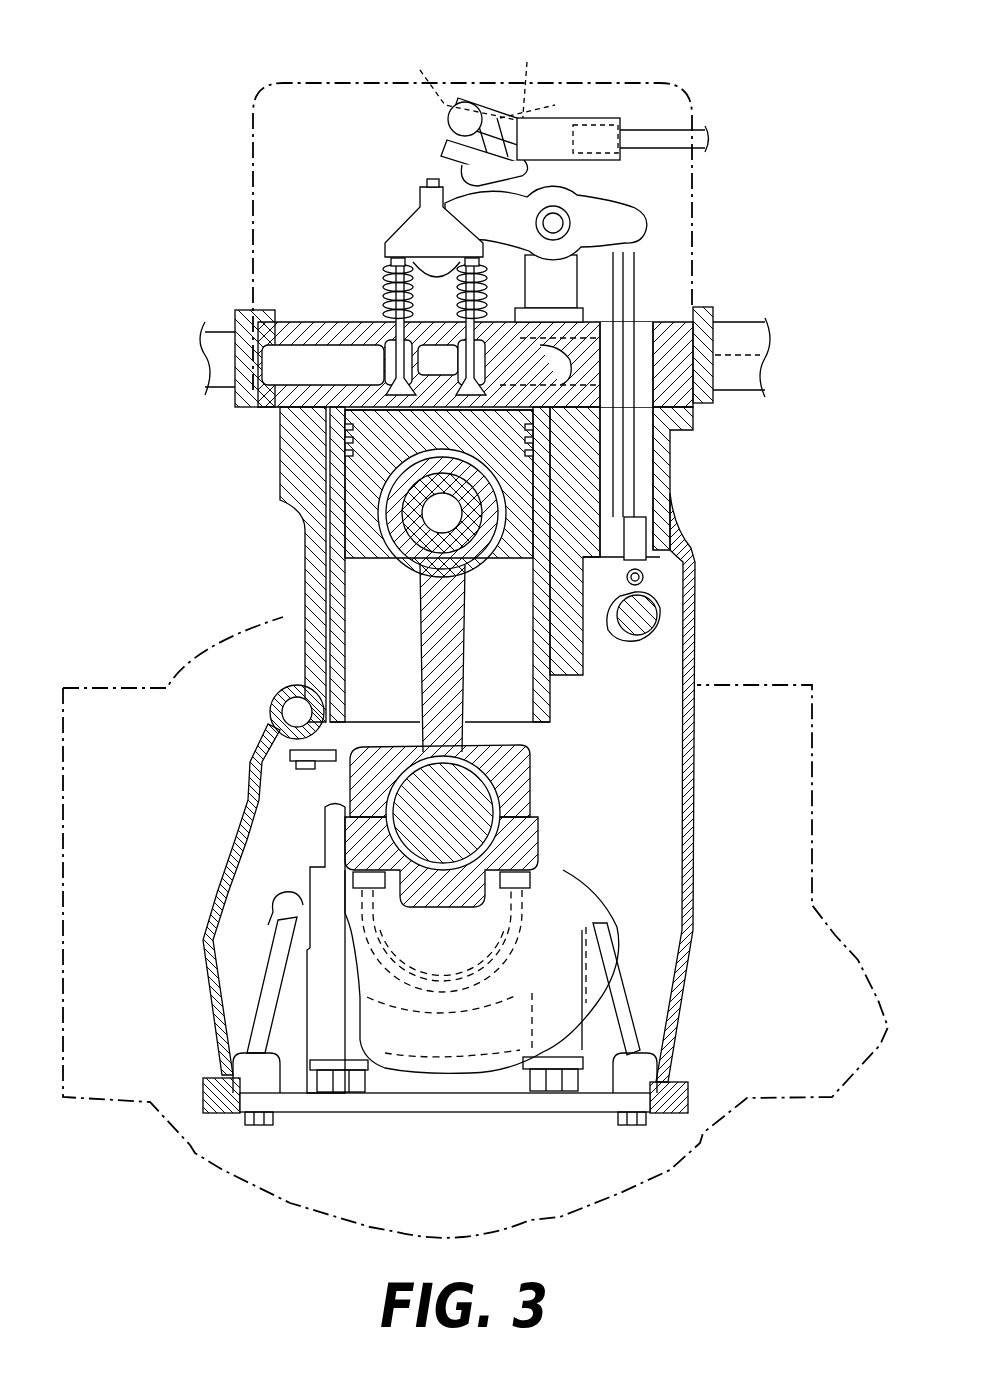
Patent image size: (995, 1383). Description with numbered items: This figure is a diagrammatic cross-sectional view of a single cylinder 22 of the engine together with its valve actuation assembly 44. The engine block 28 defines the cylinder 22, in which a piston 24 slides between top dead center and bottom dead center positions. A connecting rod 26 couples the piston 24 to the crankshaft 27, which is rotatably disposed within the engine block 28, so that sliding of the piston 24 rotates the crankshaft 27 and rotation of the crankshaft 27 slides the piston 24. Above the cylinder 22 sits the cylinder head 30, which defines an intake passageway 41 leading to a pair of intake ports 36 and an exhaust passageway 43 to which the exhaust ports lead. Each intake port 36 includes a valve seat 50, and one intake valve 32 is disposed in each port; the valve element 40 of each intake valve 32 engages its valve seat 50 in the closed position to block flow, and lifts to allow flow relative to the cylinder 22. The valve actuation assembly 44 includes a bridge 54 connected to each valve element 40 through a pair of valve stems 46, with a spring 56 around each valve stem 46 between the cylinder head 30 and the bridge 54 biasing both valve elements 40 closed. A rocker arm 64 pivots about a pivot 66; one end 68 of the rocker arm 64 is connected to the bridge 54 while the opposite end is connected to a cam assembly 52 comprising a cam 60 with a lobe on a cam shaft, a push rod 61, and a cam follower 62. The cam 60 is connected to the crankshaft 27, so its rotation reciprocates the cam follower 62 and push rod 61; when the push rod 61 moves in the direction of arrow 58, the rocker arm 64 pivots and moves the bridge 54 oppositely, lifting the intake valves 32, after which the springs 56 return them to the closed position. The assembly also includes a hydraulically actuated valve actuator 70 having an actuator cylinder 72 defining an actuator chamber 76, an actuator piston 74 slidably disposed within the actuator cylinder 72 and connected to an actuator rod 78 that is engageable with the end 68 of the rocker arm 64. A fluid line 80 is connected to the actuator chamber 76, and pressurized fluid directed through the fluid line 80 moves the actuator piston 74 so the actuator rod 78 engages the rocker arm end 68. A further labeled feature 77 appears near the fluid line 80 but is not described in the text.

The cylinder 22 is at (352, 598).
The piston 24 is at (330, 535).
The connecting rod 26 is at (465, 712).
The crankshaft 27 is at (566, 888).
The engine block 28 is at (300, 646).
The cylinder head 30 is at (693, 400).
The intake valve 32 is at (380, 330).
The intake port 36 is at (385, 390).
The valve element 40 is at (447, 397).
The intake passageway 41 is at (258, 352).
The exhaust passageway 43 is at (757, 350).
The valve actuation assembly 44 is at (735, 78).
The valve stem 46 is at (384, 293).
The valve seat 50 is at (352, 445).
The cam assembly 52 is at (790, 508).
The bridge 54 is at (417, 243).
The spring 56 is at (386, 262).
The arrow 58 is at (697, 447).
The cam 60 is at (625, 640).
The push rod 61 is at (636, 500).
The cam follower 62 is at (648, 577).
The rocker arm 64 is at (612, 204).
The pivot 66 is at (585, 176).
The end of rocker arm 68 is at (436, 186).
The valve actuator 70 is at (554, 93).
The actuator cylinder 72 is at (500, 92).
The actuator piston 74 is at (465, 102).
The actuator chamber 76 is at (527, 81).
The fuel line 77 is at (537, 140).
The actuator rod 78 is at (463, 178).
The fluid line 80 is at (620, 120).